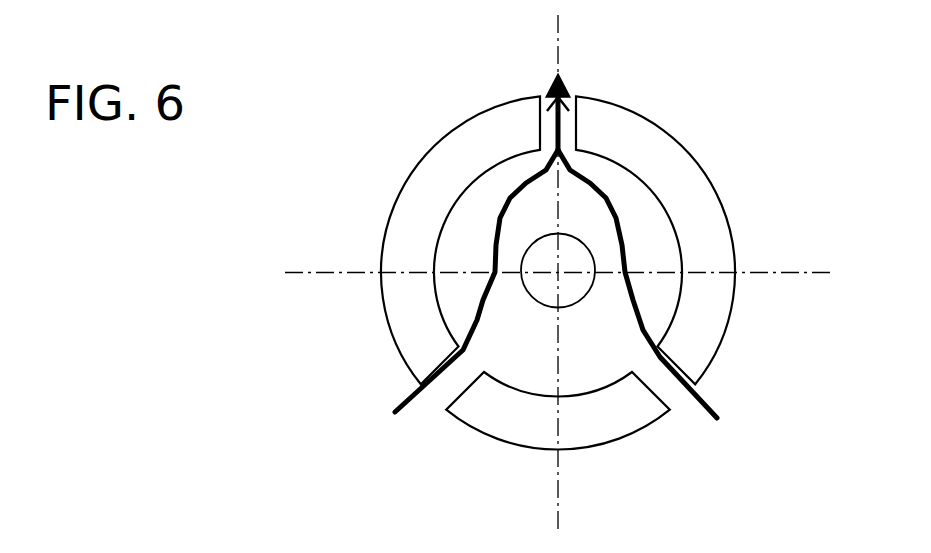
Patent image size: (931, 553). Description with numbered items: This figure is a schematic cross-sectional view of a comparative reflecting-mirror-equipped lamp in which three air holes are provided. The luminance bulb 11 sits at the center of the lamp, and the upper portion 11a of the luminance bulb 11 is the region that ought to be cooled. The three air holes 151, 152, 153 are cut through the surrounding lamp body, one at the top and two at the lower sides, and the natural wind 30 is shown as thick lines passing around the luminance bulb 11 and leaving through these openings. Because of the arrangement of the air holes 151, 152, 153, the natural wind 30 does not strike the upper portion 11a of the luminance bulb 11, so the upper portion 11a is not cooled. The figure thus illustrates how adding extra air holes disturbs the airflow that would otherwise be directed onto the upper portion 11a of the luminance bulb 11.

The luminance bulb 11 is at (536, 281).
The upper portion 11a is at (552, 246).
The natural wind 30 is at (407, 400).
The air hole 151 is at (577, 92).
The air hole 152 is at (435, 408).
The air hole 153 is at (677, 408).